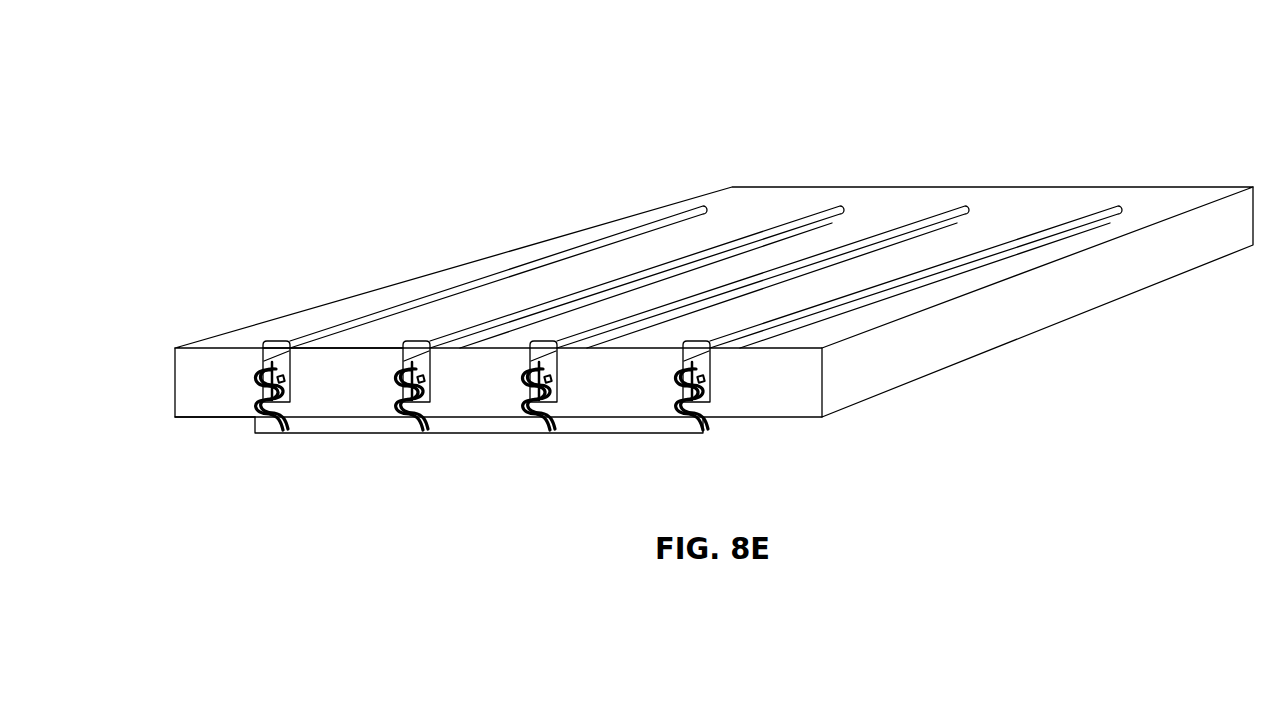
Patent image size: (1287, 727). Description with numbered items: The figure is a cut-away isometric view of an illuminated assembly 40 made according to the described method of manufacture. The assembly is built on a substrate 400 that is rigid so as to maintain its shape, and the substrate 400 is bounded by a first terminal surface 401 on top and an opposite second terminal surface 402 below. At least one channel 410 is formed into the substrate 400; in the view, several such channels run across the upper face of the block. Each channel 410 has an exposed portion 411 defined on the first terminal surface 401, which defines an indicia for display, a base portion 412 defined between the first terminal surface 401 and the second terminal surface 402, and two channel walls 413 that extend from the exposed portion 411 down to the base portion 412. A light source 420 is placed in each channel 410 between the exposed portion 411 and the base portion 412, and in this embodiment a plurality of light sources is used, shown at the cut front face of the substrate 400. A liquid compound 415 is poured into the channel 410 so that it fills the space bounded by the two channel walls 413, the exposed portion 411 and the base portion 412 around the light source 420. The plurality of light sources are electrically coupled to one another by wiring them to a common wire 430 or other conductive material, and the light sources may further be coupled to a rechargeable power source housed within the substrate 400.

The illuminated assembly 40 is at (700, 275).
The substrate 400 is at (700, 321).
The first terminal surface 401 is at (382, 346).
The second terminal surface 402 is at (240, 418).
The channel 410 is at (1059, 228).
The exposed portion 411 is at (756, 248).
The base portion 412 is at (710, 410).
The channel walls 413 is at (690, 362).
The liquid compound 415 is at (732, 327).
The light source 420 is at (683, 417).
The common wire 430 is at (378, 433).